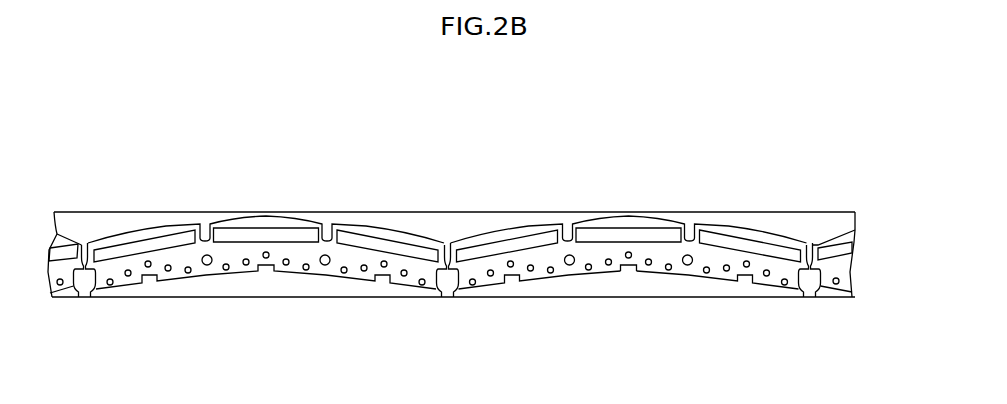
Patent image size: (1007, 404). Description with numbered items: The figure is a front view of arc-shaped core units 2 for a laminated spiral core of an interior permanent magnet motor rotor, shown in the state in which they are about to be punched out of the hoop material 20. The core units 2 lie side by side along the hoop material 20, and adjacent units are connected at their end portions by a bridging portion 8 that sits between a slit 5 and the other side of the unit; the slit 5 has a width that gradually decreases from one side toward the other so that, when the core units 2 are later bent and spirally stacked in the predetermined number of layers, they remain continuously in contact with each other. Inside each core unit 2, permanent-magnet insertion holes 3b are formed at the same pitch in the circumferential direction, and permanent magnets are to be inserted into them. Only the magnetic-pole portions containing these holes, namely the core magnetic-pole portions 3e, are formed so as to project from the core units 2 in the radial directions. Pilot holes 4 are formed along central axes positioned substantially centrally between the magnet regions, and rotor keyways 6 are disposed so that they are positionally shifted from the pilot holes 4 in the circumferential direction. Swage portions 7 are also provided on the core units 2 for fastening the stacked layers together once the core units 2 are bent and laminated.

The hoop material 20 is at (384, 217).
The core unit 2 is at (542, 218).
The permanent-magnet insertion hole 3b is at (607, 230).
The core magnetic-pole portion 3e is at (643, 218).
The pilot hole 4 is at (689, 261).
The slit 5 is at (811, 286).
The rotor keyway 6 is at (626, 272).
The swage portion 7 is at (781, 279).
The bridging portion 8 is at (808, 243).